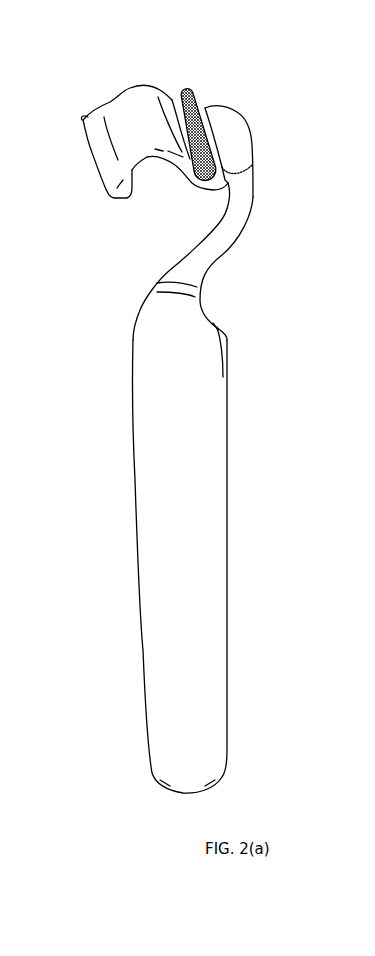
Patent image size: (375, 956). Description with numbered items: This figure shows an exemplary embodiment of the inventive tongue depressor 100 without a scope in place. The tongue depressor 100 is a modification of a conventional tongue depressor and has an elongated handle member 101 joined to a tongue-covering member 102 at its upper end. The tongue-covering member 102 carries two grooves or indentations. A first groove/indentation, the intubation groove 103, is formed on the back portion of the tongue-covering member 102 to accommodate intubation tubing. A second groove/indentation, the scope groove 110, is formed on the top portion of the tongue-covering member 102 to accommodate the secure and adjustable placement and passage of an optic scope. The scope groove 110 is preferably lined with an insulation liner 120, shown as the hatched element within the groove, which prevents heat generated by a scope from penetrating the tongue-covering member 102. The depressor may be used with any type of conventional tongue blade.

The tongue depressor 100 is at (292, 120).
The handle member 101 is at (207, 443).
The tongue-covering member 102 is at (102, 155).
The first groove/indentation (intubation groove) 103 is at (158, 183).
The second groove/indentation (scope groove) 110 is at (175, 102).
The insulation liner 120 is at (202, 105).